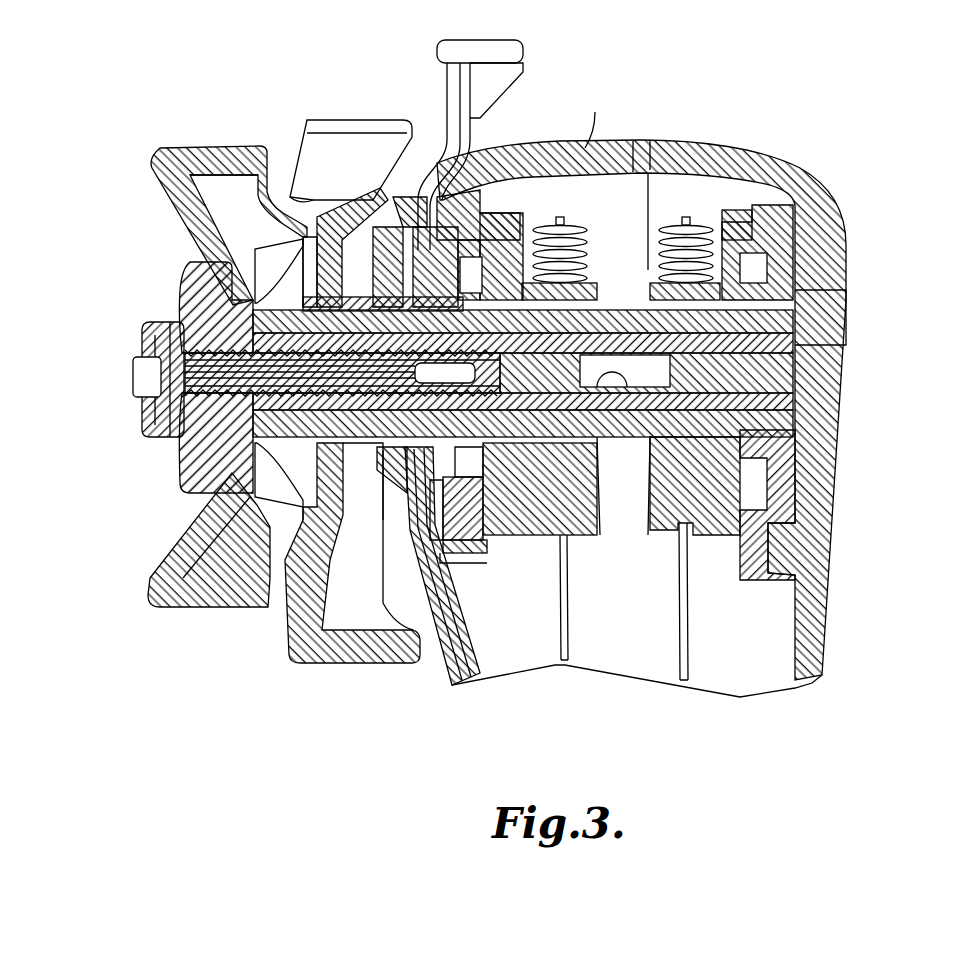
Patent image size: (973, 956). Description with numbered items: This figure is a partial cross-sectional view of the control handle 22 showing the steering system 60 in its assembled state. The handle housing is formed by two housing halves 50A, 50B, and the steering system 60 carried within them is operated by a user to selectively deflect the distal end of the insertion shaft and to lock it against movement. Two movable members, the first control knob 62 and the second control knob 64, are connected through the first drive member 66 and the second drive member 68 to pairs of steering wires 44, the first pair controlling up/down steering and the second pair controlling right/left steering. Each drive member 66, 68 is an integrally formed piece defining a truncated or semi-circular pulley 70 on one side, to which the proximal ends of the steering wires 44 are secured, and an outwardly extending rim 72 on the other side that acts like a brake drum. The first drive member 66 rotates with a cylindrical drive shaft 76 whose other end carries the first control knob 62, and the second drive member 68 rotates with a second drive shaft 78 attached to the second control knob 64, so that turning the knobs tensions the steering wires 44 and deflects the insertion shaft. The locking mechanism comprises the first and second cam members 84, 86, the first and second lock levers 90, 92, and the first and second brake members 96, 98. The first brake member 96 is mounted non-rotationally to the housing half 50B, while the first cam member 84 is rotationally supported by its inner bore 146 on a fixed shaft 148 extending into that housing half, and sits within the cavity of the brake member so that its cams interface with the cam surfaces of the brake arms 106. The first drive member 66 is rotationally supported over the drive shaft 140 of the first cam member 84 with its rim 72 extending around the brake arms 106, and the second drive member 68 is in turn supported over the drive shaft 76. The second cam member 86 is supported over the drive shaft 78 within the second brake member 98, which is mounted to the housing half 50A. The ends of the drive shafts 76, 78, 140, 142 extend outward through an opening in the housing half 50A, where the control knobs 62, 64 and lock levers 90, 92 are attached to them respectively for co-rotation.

The control handle 22 is at (880, 460).
The steering wires 44 is at (562, 662).
The housing half 50A is at (601, 118).
The housing half 50B is at (655, 144).
The steering system 60 is at (205, 118).
The first control knob 62 is at (162, 152).
The second control knob 64 is at (305, 650).
The first drive member 66 is at (720, 215).
The second drive member 68 is at (530, 222).
The pulley 70 is at (710, 537).
The rim 72 is at (485, 190).
The drive shaft 76 is at (180, 315).
The drive shaft 78 is at (322, 215).
The first cam member 84 is at (800, 305).
The second cam member 86 is at (440, 185).
The first lock lever 90 is at (170, 323).
The second lock lever 92 is at (455, 48).
The first brake member 96 is at (790, 528).
The second brake member 98 is at (450, 540).
The brake arms 106 is at (497, 535).
The drive shaft 140 is at (200, 472).
The drive shaft 142 is at (383, 197).
The inner bore 146 is at (640, 540).
The fixed shaft 148 is at (772, 380).